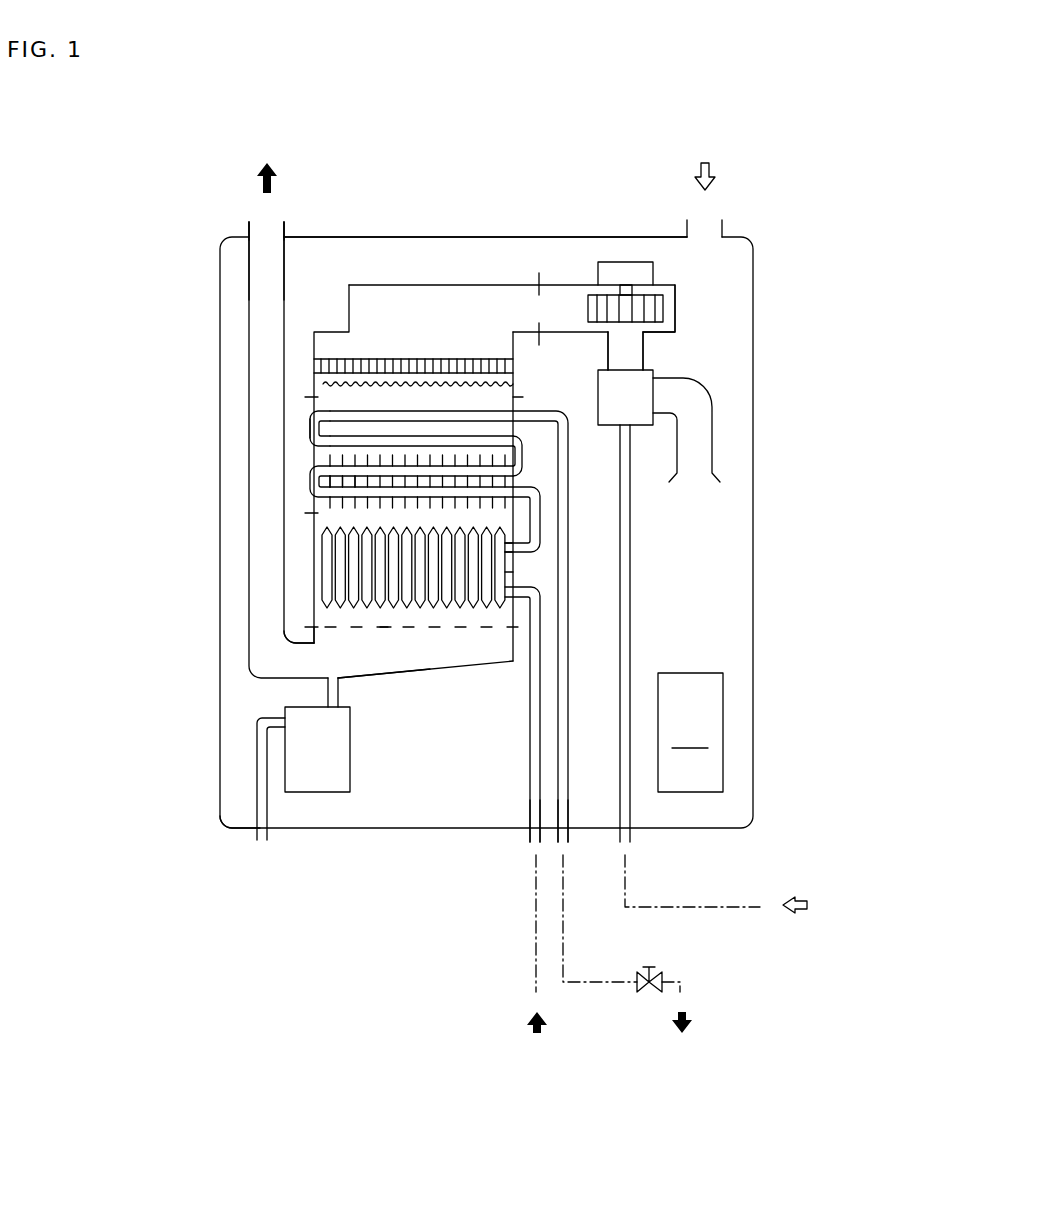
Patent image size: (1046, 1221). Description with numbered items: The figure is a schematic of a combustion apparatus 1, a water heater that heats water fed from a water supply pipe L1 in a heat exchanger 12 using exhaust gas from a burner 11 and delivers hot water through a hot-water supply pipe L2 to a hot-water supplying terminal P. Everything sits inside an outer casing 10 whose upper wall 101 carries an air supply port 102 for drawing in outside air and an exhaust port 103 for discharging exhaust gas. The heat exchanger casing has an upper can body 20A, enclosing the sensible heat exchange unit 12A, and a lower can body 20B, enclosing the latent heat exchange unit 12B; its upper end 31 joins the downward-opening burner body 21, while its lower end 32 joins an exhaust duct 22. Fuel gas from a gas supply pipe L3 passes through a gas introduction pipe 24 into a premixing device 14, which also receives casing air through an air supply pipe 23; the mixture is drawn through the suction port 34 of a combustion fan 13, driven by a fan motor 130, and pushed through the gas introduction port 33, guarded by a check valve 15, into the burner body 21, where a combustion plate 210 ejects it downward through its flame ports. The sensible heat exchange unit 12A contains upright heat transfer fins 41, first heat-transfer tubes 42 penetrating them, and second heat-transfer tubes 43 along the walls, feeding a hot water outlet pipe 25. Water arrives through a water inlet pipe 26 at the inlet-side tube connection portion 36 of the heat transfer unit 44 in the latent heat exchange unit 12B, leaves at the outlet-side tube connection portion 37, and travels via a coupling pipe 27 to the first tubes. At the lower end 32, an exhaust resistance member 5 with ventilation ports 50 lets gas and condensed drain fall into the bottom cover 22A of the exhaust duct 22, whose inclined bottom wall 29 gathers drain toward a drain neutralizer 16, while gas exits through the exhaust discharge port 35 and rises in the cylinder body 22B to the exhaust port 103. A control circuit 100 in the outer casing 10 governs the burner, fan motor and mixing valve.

The combustion apparatus 1 is at (187, 815).
The exhaust resistance member 5 is at (497, 662).
The outer casing 10 is at (754, 778).
The burner 11 is at (333, 306).
The heat exchanger 12 is at (332, 596).
The sensible heat exchange unit 12A is at (336, 596).
The latent heat exchange unit 12B is at (314, 565).
The combustion fan 13 is at (680, 305).
The premixing device 14 is at (641, 427).
The check valve 15 is at (533, 295).
The drain neutralizer 16 is at (312, 793).
The upper can body 20A is at (308, 453).
The lower can body 20B is at (312, 600).
The burner body 21 is at (418, 285).
The exhaust duct 22 is at (244, 665).
The bottom cover 22A is at (513, 648).
The cylinder body 22B is at (250, 293).
The air supply pipe 23 is at (712, 413).
The gas introduction pipe 24 is at (630, 802).
The hot water outlet pipe 25 is at (567, 792).
The water inlet pipe 26 is at (530, 800).
The coupling pipe 27 is at (540, 490).
The bottom wall 29 is at (465, 669).
The upper end 31 is at (328, 395).
The lower end 32 is at (332, 627).
The gas introduction port 33 is at (545, 309).
The suction port 34 is at (628, 334).
The exhaust discharge port 35 is at (313, 662).
The inlet-side tube connection portion 36 is at (516, 628).
The outlet-side tube connection portion 37 is at (515, 540).
The heat transfer fins 41 is at (367, 458).
The first heat-transfer tubes 42 is at (340, 458).
The second heat-transfer tubes 43 is at (500, 405).
The heat transfer unit 44 is at (512, 572).
The ventilation ports 50 is at (400, 628).
The control circuit 100 is at (690, 732).
The upper wall 101 is at (457, 236).
The air supply port 102 is at (714, 213).
The exhaust port 103 is at (258, 214).
The fan motor 130 is at (622, 262).
The combustion plate 210 is at (338, 357).
The water supply pipe L1 is at (536, 945).
The hot-water supply pipe L2 is at (563, 900).
The gas supply pipe L3 is at (717, 907).
The hot-water supplying terminal P is at (648, 1000).